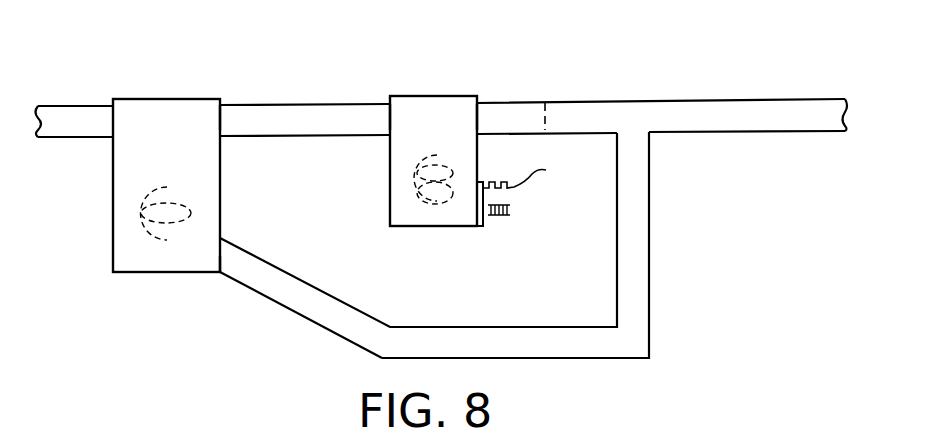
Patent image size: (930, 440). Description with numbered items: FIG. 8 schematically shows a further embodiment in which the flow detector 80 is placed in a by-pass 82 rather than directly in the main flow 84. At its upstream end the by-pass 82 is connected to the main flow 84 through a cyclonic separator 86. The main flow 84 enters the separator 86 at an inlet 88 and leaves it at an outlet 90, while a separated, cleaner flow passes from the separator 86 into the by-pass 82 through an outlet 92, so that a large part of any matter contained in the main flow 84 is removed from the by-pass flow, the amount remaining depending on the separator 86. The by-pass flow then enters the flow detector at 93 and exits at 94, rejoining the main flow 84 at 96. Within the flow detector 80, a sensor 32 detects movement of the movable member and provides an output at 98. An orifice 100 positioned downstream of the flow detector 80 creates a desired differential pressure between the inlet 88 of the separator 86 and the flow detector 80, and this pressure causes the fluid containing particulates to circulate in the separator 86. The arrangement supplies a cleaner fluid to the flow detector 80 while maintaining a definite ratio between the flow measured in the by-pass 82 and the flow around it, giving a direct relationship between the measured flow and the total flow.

The sensor 32 is at (483, 222).
The flow detector 80 is at (418, 94).
The by-pass 82 is at (293, 106).
The main flow 84 is at (43, 106).
The cyclonic separator 86 is at (110, 236).
The inlet 88 is at (113, 99).
The outlet 90 is at (222, 258).
The outlet 92 is at (222, 112).
The flow detector inlet 93 is at (380, 104).
The flow detector exit 94 is at (478, 103).
The rejoining point 96 is at (632, 130).
The output 98 is at (509, 205).
The orifice 100 is at (548, 104).